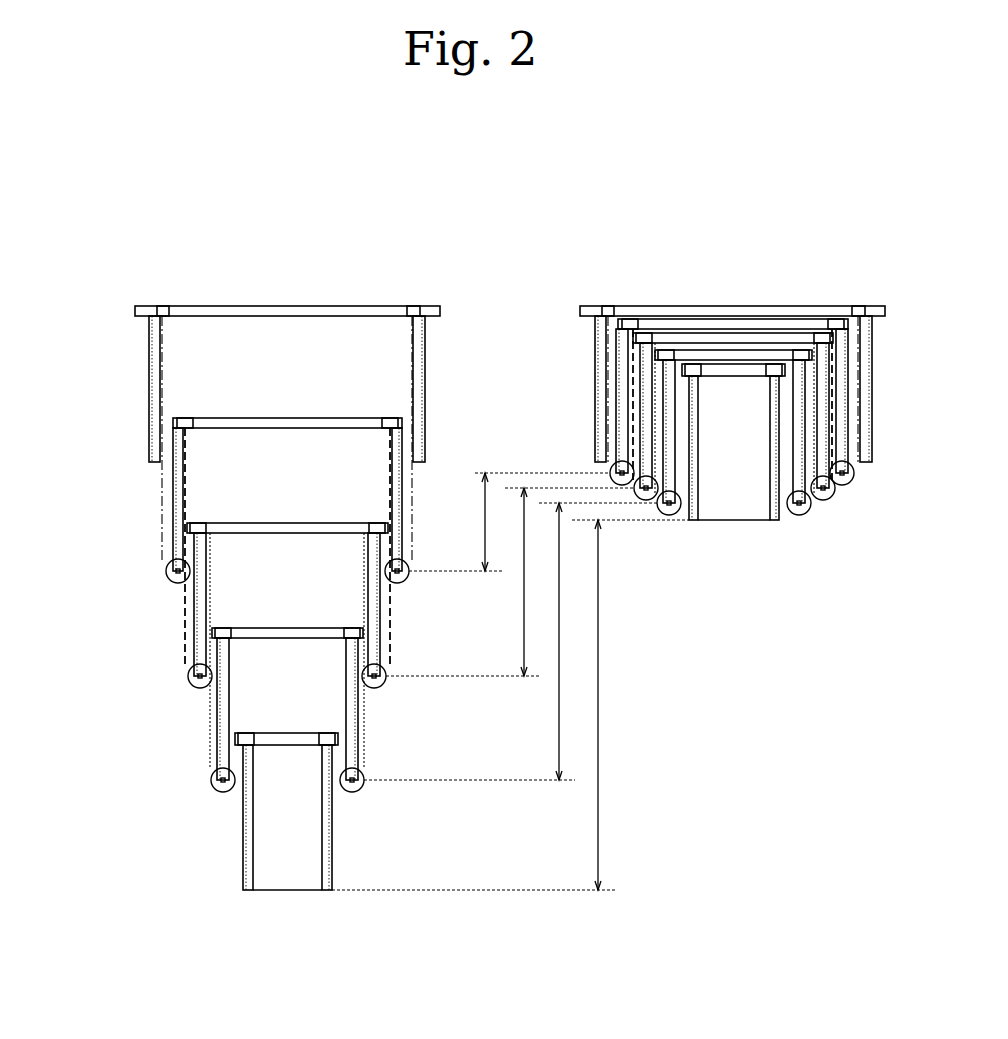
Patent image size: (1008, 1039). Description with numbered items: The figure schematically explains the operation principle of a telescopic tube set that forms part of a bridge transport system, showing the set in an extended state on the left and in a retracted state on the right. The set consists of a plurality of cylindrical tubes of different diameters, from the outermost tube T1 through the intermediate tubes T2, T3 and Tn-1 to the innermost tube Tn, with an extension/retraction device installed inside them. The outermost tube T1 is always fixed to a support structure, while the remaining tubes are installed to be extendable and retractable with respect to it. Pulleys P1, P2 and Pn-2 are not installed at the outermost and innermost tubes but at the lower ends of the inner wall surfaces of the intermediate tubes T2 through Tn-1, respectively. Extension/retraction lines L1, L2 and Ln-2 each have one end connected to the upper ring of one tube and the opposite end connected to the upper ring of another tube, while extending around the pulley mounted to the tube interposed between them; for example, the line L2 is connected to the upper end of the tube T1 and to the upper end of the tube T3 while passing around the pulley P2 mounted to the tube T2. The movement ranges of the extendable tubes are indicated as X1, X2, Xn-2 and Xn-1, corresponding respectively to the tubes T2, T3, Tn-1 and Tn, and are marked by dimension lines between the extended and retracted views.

The outermost tube T1 is at (468, 384).
The extension/retraction line L1 is at (462, 438).
The second tube T2 is at (461, 445).
The first pulley P1 is at (468, 522).
The extension/retraction line L2 is at (458, 496).
The third tube T3 is at (464, 504).
The second pulley P2 is at (468, 590).
The extension/retraction line Ln-2 is at (449, 555).
The (n-1)th tube Tn-1 is at (459, 568).
The (n-2)th pulley Pn-2 is at (459, 661).
The innermost tube Tn is at (466, 627).
The movement range X1 is at (509, 522).
The movement range X2 is at (510, 582).
The movement range Xn-2 is at (510, 641).
The movement range Xn-1 is at (510, 705).